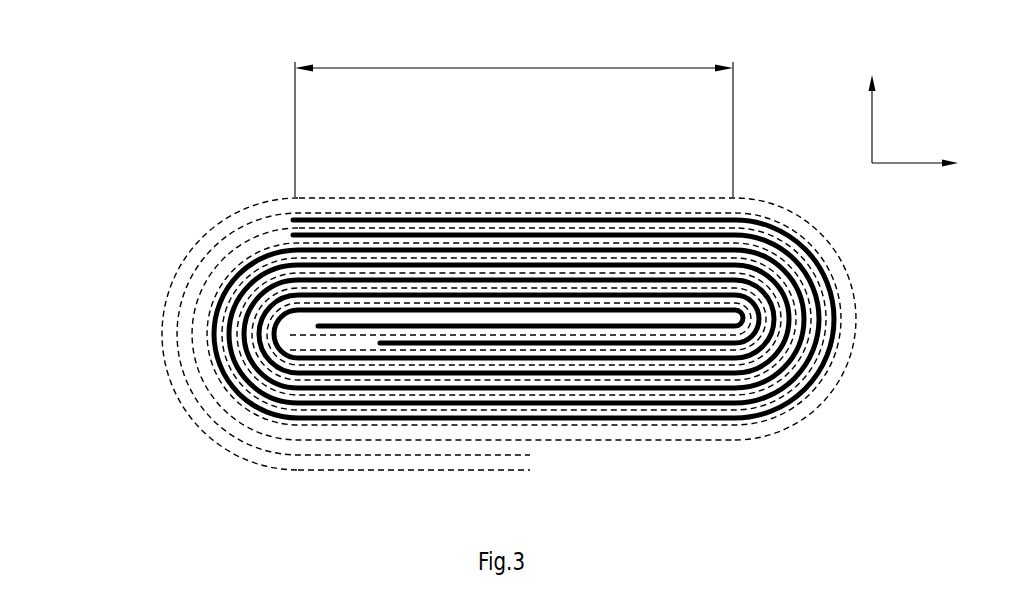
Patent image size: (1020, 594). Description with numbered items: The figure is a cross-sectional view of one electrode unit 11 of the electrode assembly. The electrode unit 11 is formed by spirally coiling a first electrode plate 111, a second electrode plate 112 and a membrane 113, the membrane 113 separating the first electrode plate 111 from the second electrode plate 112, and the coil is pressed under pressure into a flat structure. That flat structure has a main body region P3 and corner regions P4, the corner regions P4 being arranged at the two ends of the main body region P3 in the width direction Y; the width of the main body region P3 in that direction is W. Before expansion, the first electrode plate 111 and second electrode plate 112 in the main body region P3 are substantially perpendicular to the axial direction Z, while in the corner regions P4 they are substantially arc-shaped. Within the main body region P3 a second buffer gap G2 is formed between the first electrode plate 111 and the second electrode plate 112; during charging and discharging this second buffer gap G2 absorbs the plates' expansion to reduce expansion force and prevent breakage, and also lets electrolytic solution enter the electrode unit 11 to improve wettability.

The electrode unit 11 is at (142, 120).
The first electrode plate 111 is at (433, 219).
The second electrode plate 112 is at (502, 234).
The membrane 113 is at (558, 198).
The second buffer gap G2 is at (367, 227).
The main body region P3 is at (540, 470).
The corner regions P4 is at (160, 340).